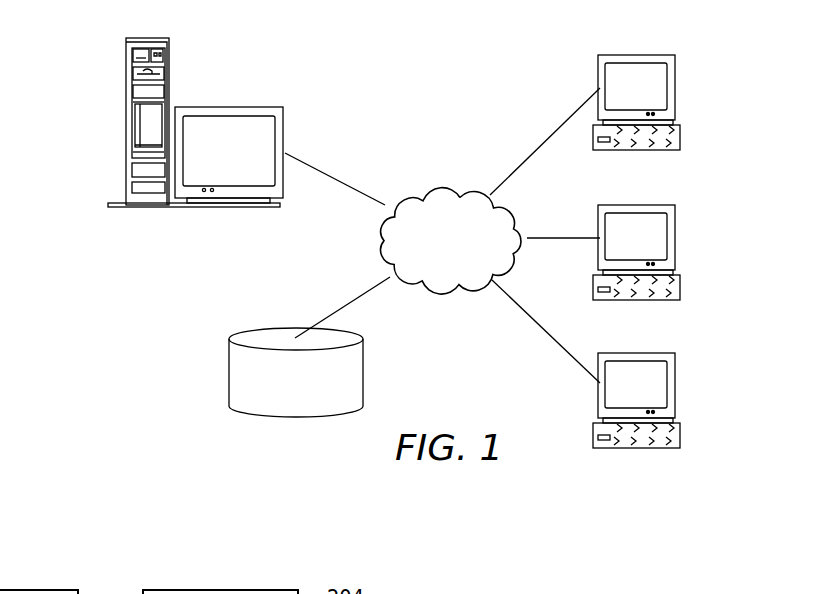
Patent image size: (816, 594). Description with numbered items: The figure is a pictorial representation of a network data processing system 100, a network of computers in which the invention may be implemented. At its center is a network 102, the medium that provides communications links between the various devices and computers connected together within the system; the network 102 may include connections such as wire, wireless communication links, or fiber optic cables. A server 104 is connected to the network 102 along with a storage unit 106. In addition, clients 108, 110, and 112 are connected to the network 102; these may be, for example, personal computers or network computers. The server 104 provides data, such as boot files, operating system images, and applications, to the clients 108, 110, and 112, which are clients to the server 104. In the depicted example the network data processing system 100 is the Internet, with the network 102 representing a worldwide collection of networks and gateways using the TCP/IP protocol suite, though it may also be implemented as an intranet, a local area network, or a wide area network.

The network data processing system 100 is at (375, 72).
The network 102 is at (418, 193).
The server 104 is at (126, 120).
The storage unit 106 is at (229, 372).
The client 108 is at (675, 87).
The client 110 is at (675, 238).
The client 112 is at (676, 383).